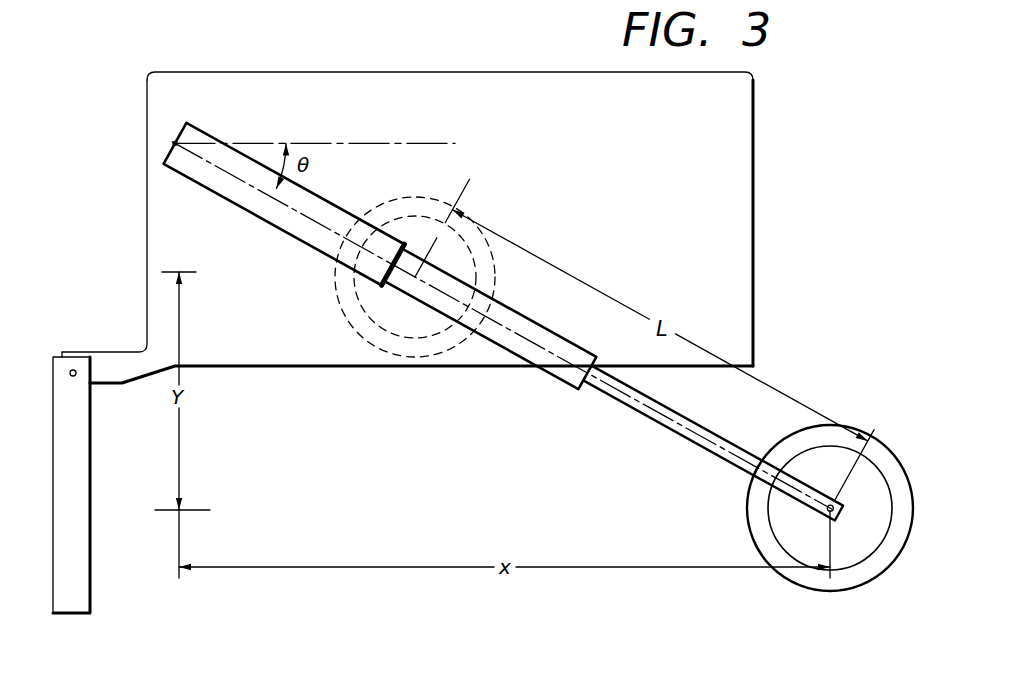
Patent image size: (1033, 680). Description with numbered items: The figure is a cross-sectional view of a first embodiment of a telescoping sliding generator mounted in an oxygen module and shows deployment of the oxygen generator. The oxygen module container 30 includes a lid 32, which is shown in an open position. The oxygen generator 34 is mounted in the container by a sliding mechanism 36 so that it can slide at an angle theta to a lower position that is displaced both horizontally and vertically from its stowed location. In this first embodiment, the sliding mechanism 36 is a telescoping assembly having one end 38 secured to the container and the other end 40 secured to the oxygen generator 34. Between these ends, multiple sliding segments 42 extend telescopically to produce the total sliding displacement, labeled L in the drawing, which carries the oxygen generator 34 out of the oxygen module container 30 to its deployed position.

The oxygen module container 30 is at (146, 272).
The lid 32 is at (53, 413).
The oxygen generator 34 is at (873, 488).
The sliding mechanism 36 is at (556, 378).
The one end 38 is at (198, 124).
The other end 40 is at (825, 509).
The sliding segments 42 is at (499, 338).